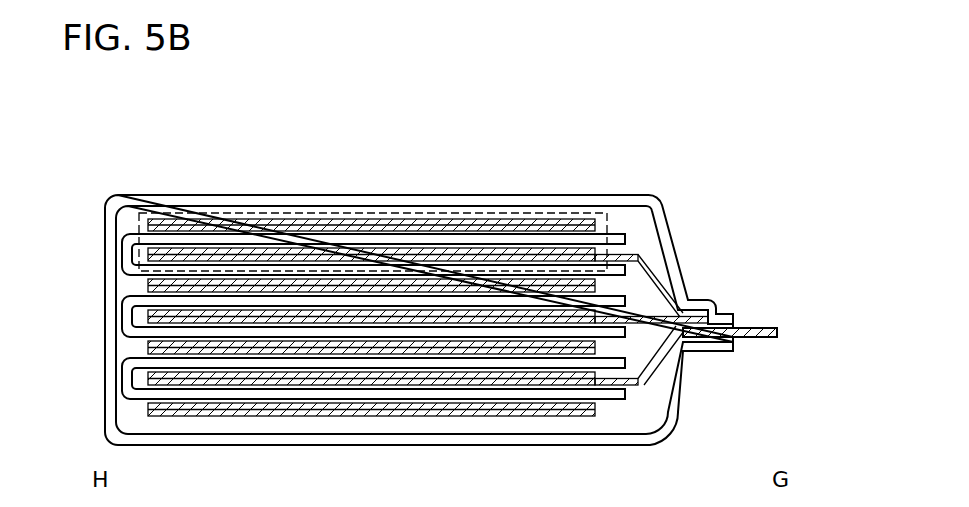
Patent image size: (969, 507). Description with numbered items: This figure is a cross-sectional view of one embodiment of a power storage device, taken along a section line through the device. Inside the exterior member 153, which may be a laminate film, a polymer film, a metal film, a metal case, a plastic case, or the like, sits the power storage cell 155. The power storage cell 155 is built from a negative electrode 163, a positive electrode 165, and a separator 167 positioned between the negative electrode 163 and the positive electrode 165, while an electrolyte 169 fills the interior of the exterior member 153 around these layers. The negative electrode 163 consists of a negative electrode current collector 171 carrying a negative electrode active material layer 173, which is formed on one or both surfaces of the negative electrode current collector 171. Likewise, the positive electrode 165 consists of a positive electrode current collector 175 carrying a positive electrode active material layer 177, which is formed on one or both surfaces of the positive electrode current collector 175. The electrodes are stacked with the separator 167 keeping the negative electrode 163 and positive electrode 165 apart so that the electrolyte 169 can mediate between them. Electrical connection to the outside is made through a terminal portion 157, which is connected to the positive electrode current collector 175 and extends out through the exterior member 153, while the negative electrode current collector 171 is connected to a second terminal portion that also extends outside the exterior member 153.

The exterior member 153 is at (672, 248).
The power storage cell 155 is at (172, 212).
The terminal portion 157 is at (776, 331).
The negative electrode 163 is at (310, 132).
The positive electrode 165 is at (565, 132).
The separator 167 is at (357, 250).
The electrolyte 169 is at (640, 233).
The negative electrode current collector 171 is at (245, 222).
The negative electrode active material layer 173 is at (300, 237).
The positive electrode current collector 175 is at (500, 255).
The positive electrode active material layer 177 is at (445, 250).